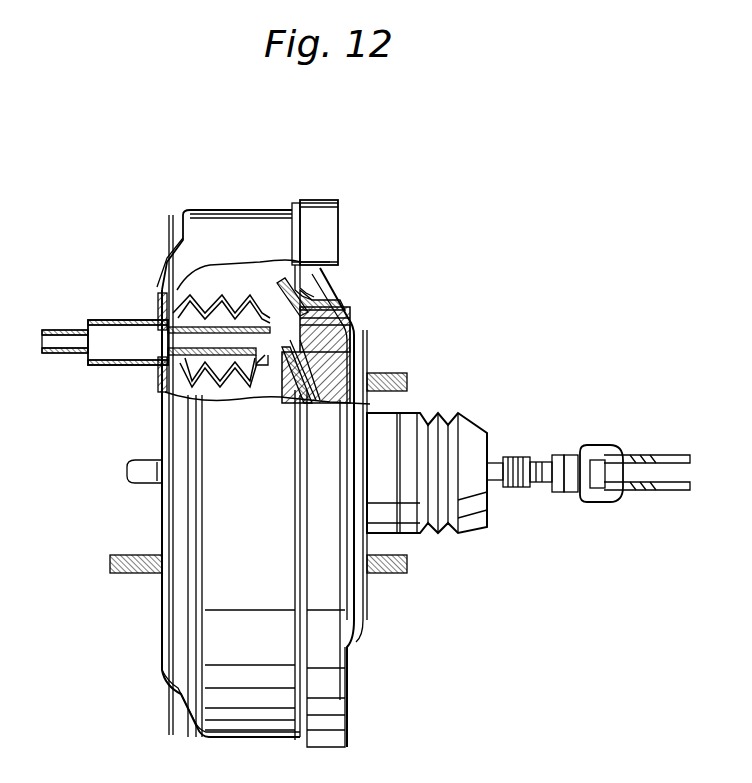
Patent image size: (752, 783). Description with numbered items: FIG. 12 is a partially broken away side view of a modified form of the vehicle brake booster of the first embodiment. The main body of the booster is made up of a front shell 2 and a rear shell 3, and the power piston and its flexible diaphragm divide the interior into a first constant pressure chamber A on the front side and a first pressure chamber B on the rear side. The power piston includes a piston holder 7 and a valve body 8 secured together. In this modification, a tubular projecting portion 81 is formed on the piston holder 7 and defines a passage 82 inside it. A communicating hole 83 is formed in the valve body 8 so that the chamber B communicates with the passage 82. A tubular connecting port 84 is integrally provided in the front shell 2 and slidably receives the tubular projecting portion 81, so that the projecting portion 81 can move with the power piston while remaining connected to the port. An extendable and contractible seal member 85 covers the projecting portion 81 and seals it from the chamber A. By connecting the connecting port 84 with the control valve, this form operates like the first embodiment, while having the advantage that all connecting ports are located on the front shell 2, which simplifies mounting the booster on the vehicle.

The front shell 2 is at (165, 388).
The rear shell 3 is at (345, 292).
The piston holder 7 is at (273, 403).
The valve body 8 is at (330, 360).
The tubular projecting portion 81 is at (228, 318).
The passage 82 is at (275, 305).
The communicating hole 83 is at (330, 335).
The tubular connecting port 84 is at (65, 328).
The seal member 85 is at (205, 300).
The first constant pressure chamber A is at (175, 265).
The first pressure chamber B is at (360, 340).